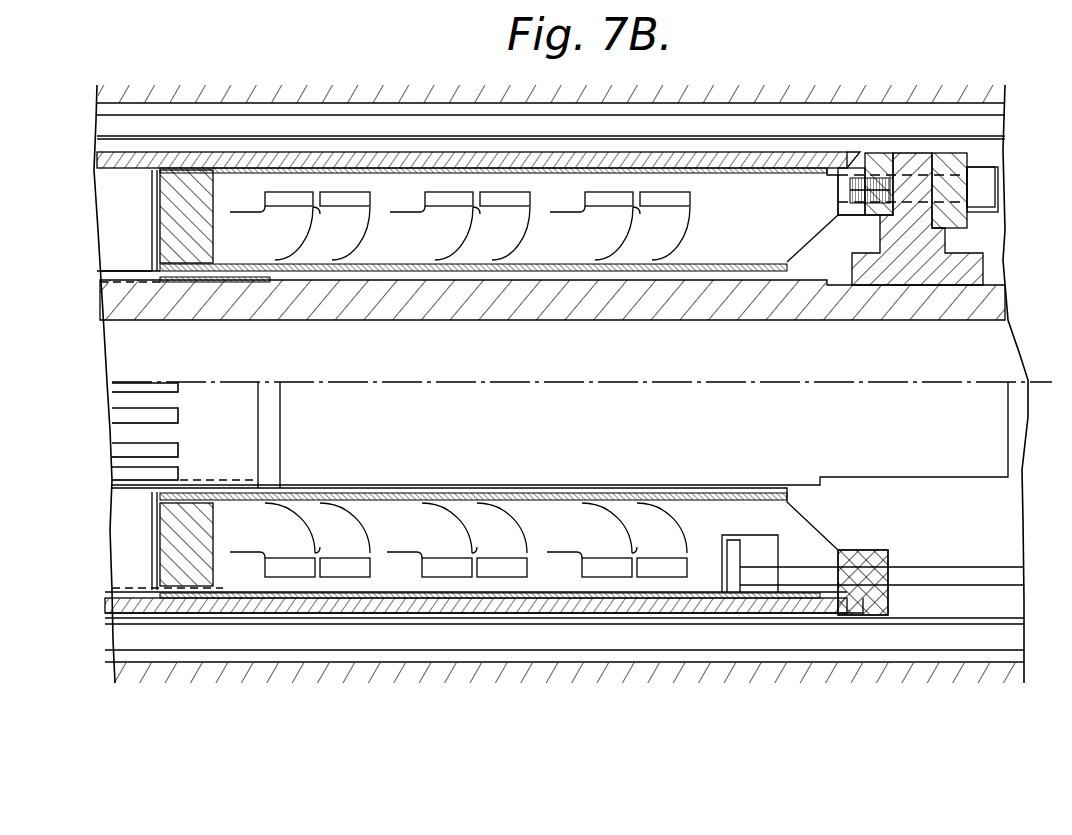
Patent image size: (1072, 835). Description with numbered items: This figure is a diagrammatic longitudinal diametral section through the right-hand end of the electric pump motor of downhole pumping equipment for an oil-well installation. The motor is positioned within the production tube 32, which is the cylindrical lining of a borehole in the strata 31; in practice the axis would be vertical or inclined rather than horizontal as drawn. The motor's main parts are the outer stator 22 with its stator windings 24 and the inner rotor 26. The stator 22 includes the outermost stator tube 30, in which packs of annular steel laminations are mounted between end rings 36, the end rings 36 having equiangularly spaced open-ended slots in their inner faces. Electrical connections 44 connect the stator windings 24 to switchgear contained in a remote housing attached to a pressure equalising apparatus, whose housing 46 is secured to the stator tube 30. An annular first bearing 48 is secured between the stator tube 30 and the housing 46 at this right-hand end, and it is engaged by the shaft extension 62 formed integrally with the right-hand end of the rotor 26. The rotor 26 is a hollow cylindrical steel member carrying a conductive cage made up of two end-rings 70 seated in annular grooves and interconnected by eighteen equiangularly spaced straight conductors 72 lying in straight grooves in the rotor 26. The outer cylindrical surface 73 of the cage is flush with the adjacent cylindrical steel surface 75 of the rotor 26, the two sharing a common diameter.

The outer stator 22 is at (150, 620).
The stator windings 24 is at (660, 238).
The inner rotor 26 is at (243, 302).
The outermost stator tube 30 is at (565, 160).
The strata 31 is at (133, 98).
The production tube 32 is at (403, 118).
The end rings 36 is at (173, 200).
The electrical connections 44 is at (912, 577).
The housing 46 is at (955, 155).
The first bearing 48 is at (915, 280).
The shaft extension 62 is at (508, 308).
The end-rings 70 is at (203, 282).
The straight conductors 72 is at (113, 287).
The outer cylindrical surface 73 is at (127, 400).
The cylindrical steel surface 75 is at (127, 385).